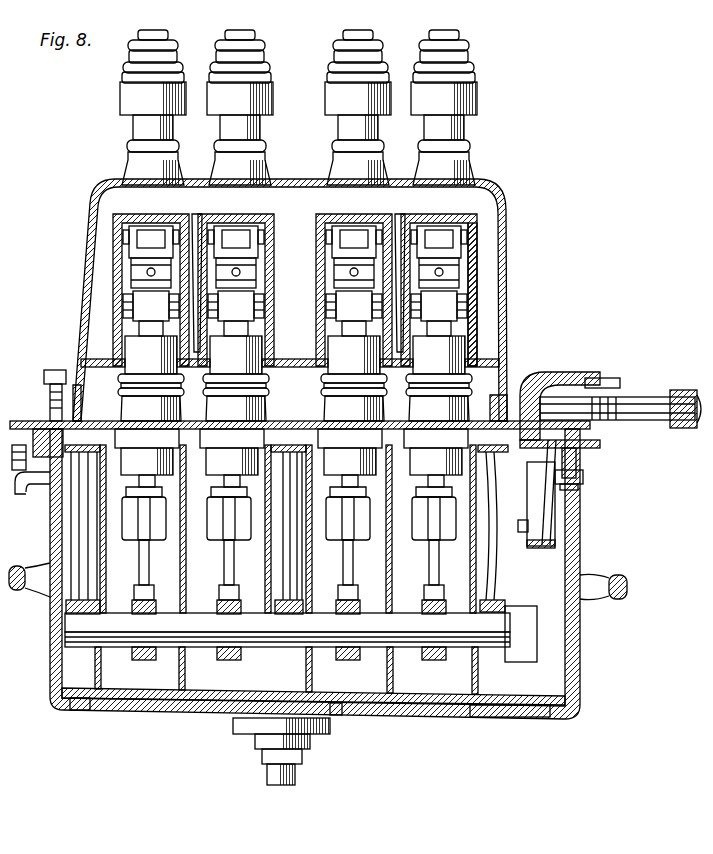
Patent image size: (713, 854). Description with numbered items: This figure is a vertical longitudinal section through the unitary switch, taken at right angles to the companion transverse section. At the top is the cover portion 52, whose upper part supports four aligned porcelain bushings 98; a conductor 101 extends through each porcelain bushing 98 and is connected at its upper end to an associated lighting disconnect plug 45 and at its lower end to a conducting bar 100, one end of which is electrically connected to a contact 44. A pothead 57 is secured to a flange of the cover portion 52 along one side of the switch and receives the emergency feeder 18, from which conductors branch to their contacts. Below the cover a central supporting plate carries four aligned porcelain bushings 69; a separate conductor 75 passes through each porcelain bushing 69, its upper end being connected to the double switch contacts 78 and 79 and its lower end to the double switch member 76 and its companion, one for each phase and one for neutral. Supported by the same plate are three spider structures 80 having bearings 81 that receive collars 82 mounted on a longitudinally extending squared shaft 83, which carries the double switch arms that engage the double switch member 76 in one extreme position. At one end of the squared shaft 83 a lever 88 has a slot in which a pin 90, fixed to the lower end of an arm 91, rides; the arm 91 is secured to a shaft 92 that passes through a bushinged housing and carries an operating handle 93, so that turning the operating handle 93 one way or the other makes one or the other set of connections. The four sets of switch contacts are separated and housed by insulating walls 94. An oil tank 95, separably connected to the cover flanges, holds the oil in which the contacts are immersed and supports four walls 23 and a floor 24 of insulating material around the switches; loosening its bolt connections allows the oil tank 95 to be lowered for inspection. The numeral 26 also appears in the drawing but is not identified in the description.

The insulator cap 45 is at (130, 99).
The insulator neck 98 is at (219, 132).
The cover 52 is at (297, 180).
The compartment housing 100 is at (115, 217).
The contact clip 44 is at (196, 220).
The compartment wall 101 is at (479, 240).
The contact block 78 is at (116, 292).
The insulator bushing 69 is at (112, 362).
The operating shaft 92 is at (580, 397).
The nut 93 is at (683, 428).
The collar 75 is at (138, 480).
The pipe 79 is at (40, 465).
The guide plate 80 is at (84, 551).
The movable contact 76 is at (133, 523).
The partition 94 is at (100, 573).
The block 90 is at (528, 546).
The lever 91 is at (557, 480).
The lug 81 is at (62, 600).
The cross bar 82 is at (65, 625).
The bar 83 is at (453, 648).
The lug 88 is at (540, 607).
The tank 23 is at (72, 690).
The fitting 57 is at (233, 726).
The bottom plate 95 is at (400, 719).
The tank bottom 24 is at (480, 719).
The stud 18 is at (297, 773).
The lower compartment 26 is at (286, 670).